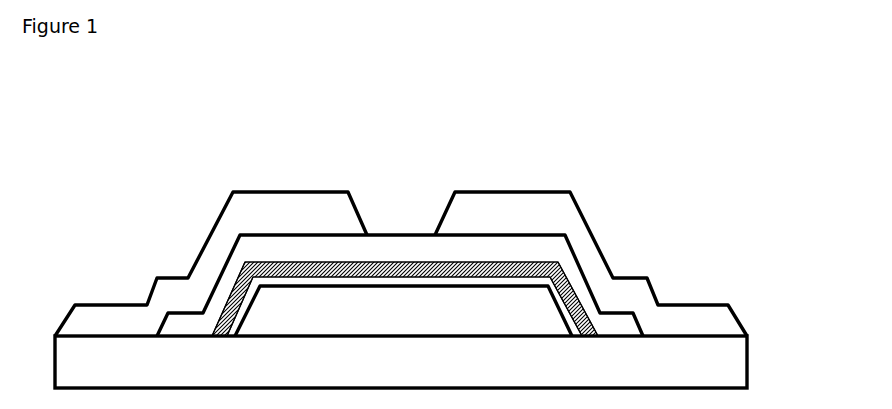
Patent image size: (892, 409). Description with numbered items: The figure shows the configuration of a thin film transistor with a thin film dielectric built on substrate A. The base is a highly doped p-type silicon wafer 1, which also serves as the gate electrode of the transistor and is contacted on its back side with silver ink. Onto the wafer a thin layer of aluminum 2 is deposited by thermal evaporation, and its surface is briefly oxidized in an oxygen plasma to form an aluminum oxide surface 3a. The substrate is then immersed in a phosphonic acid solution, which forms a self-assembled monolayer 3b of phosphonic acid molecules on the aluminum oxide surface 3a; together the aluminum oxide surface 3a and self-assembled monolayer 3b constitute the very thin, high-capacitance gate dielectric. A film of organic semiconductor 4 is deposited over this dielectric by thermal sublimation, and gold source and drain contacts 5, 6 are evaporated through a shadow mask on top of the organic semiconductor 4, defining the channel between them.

The silicon wafer 1 is at (712, 367).
The aluminum layer 2 is at (517, 318).
The aluminum oxide surface 3a is at (422, 266).
The self-assembled monolayer 3b is at (405, 299).
The organic semiconductor 4 is at (390, 228).
The source contact 5 is at (237, 218).
The drain contact 6 is at (549, 208).